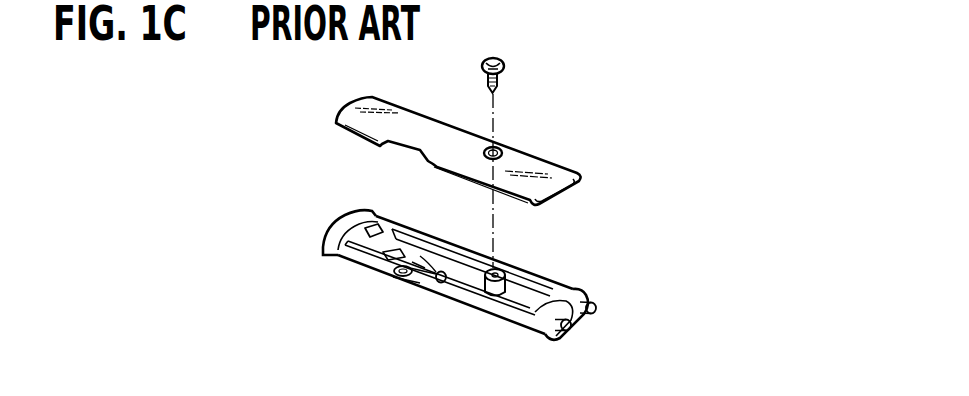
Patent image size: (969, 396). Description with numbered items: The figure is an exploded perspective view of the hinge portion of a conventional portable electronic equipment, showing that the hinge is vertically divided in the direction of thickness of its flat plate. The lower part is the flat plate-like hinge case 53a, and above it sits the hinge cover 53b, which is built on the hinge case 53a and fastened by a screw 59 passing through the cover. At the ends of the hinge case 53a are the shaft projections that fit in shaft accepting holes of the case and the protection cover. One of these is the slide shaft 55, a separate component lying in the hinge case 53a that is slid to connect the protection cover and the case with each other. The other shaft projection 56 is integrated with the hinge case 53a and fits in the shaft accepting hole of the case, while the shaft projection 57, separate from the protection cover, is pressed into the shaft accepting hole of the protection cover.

The screw 59 is at (504, 70).
The hinge cover 53b is at (542, 155).
The hinge case 53a is at (537, 283).
The slide shaft 55 is at (423, 278).
The shaft projection 57 is at (597, 308).
The shaft projection 56 is at (571, 328).